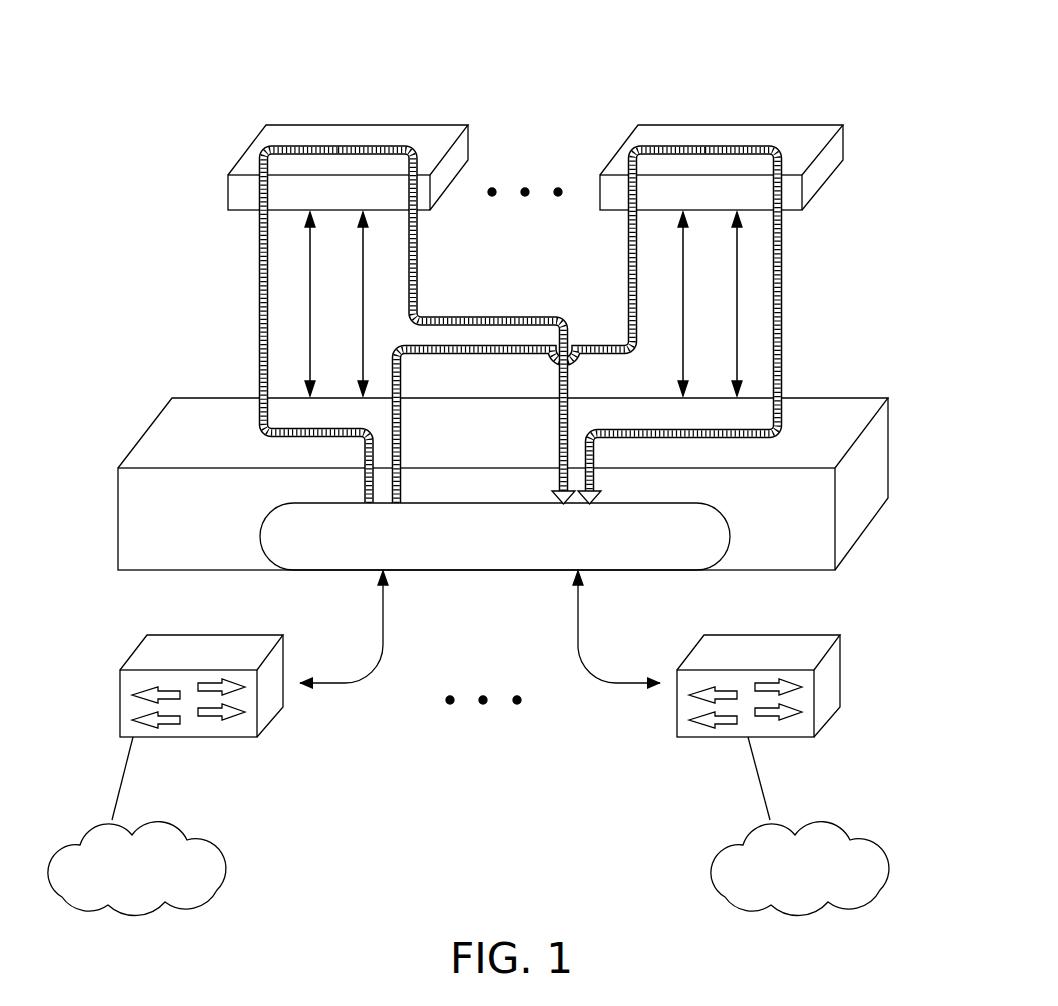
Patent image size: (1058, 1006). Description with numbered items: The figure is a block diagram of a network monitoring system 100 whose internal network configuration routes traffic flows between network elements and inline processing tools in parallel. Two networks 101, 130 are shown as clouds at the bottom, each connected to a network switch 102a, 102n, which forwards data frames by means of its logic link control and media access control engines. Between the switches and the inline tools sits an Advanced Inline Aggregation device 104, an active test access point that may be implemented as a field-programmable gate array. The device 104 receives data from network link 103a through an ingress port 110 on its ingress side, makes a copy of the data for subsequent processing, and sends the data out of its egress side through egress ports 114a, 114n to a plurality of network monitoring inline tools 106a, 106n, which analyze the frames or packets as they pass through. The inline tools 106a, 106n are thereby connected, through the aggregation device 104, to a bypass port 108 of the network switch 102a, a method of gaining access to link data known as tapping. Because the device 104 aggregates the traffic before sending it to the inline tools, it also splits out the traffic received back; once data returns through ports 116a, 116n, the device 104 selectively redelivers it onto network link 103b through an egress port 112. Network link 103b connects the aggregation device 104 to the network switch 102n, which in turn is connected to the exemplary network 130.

The network monitoring system 100 is at (806, 88).
The network 101 is at (137, 869).
The network switch 102a is at (235, 738).
The network switch 102n is at (798, 738).
The network link 103a is at (368, 670).
The network link 103b is at (580, 637).
The Advanced Inline Aggregation (AIA) device 104 is at (888, 432).
The inline tool 106a is at (238, 165).
The inline tool 106n is at (826, 162).
The bypass port 108 is at (298, 660).
The ingress port 110 is at (495, 536).
The egress port 112 is at (580, 551).
The egress port 114a is at (255, 393).
The egress port 114n is at (406, 394).
The port 116a is at (572, 394).
The port 116n is at (790, 394).
The network 130 is at (800, 869).